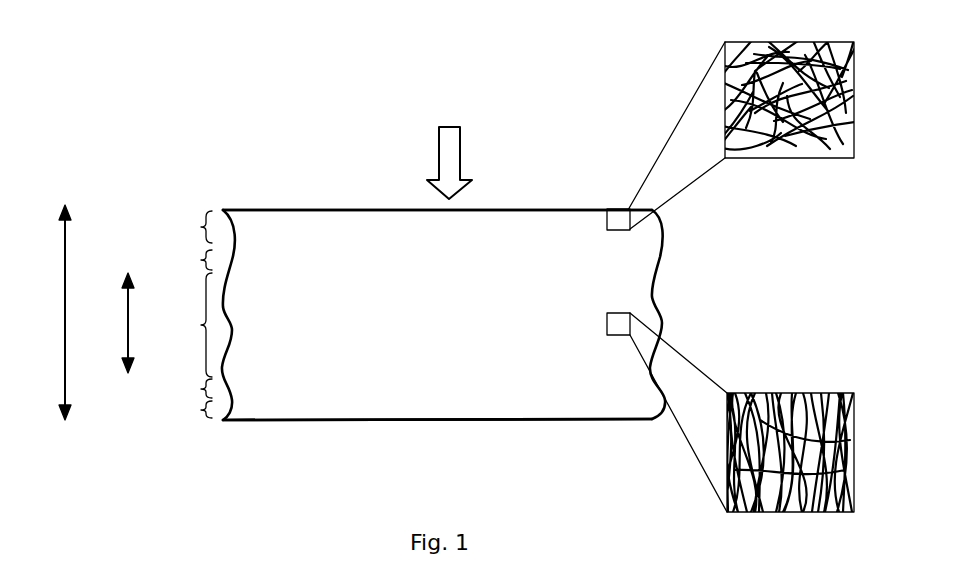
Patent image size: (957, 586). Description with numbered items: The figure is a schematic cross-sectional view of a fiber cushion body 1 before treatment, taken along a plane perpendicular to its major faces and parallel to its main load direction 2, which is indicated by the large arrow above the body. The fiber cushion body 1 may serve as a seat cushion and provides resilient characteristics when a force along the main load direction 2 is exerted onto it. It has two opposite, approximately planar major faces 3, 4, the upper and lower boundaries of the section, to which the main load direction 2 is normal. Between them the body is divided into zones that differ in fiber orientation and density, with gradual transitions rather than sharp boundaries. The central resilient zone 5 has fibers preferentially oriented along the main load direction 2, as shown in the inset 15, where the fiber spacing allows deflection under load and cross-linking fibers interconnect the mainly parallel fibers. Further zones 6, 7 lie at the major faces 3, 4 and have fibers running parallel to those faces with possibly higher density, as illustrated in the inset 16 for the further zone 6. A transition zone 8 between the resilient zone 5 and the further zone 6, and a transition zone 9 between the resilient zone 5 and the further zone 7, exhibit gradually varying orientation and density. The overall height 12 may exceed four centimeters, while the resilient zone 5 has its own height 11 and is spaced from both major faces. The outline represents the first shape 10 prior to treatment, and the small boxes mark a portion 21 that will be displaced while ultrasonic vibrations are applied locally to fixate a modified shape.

The fiber cushion body 1 is at (166, 134).
The main load direction 2 is at (460, 158).
The major face 3 is at (250, 210).
The major face 4 is at (273, 420).
The resilient zone 5 is at (194, 325).
The further zone 6 is at (194, 227).
The further zone 7 is at (194, 408).
The transition zone 8 is at (194, 260).
The transition zone 9 is at (194, 387).
The first shape 10 is at (214, 203).
The height of the resilient zone 11 is at (127, 315).
The height of the fiber cushion body 12 is at (63, 313).
The inset 15 is at (857, 393).
The inset 16 is at (856, 42).
The portion 21 is at (565, 212).